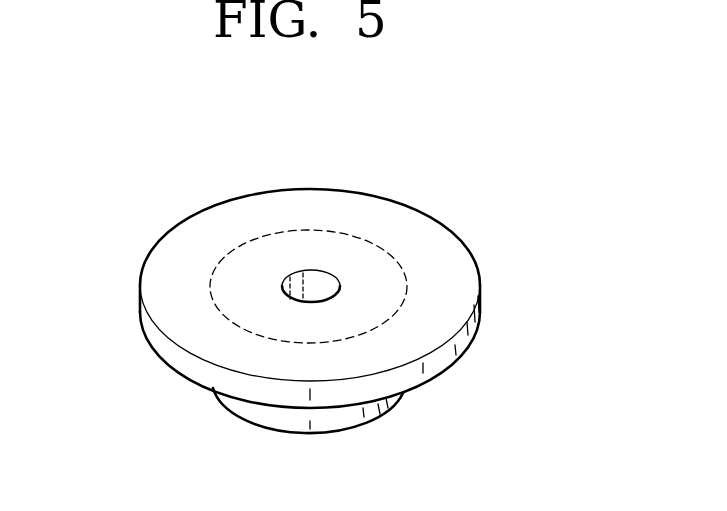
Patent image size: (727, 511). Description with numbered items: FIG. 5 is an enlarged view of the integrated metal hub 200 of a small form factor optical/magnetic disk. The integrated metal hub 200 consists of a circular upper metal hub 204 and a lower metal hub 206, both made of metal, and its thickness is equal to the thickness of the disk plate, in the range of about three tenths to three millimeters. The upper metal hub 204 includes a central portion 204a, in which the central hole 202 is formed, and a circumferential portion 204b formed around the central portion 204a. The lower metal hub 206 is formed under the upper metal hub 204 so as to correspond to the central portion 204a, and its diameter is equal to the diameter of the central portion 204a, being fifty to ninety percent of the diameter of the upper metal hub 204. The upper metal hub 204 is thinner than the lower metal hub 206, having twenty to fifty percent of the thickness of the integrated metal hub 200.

The integrated metal hub 200 is at (122, 221).
The central hole 202 is at (319, 286).
The upper metal hub 204 is at (481, 311).
The central portion 204a is at (375, 258).
The circumferential portion 204b is at (443, 253).
The lower metal hub 206 is at (383, 408).